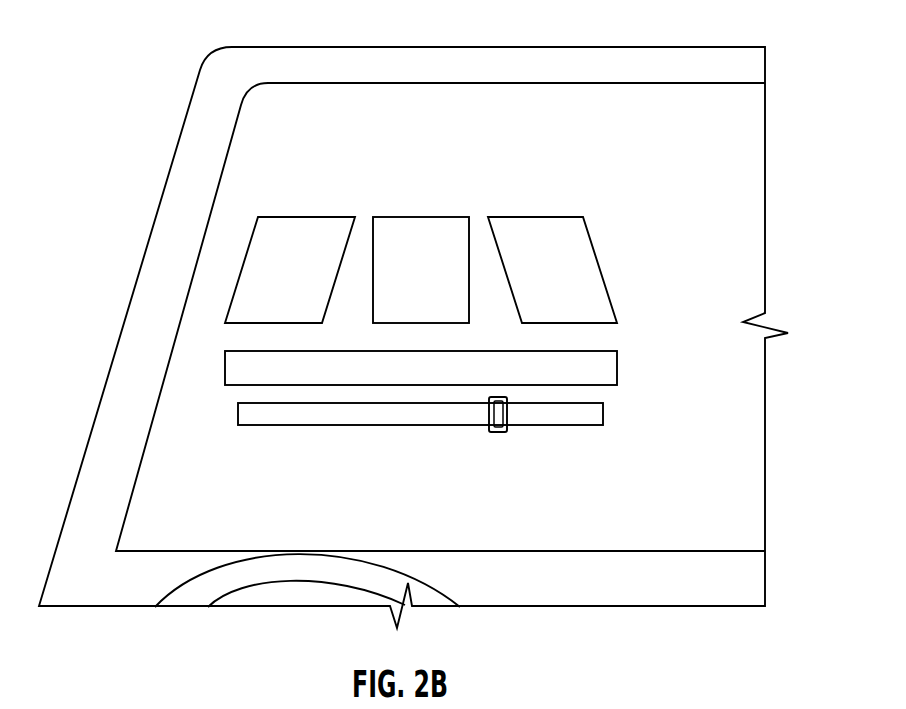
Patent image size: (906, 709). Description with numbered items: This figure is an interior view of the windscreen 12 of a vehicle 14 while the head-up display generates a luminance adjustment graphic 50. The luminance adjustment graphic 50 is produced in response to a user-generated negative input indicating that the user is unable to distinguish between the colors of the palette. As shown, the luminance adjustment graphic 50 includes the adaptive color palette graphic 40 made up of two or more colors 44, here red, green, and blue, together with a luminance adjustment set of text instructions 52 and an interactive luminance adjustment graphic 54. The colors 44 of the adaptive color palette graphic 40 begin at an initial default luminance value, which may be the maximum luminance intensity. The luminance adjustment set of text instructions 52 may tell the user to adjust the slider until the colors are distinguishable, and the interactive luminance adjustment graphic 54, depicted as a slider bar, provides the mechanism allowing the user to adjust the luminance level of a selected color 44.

The windscreen 12 is at (307, 122).
The vehicle 14 is at (166, 193).
The adaptive color palette graphic 40 is at (602, 270).
The colors 44 is at (452, 234).
The luminance adjustment graphic 50 is at (452, 234).
The luminance adjustment set of text instructions 52 is at (617, 368).
The interactive luminance adjustment graphic 54 is at (603, 413).